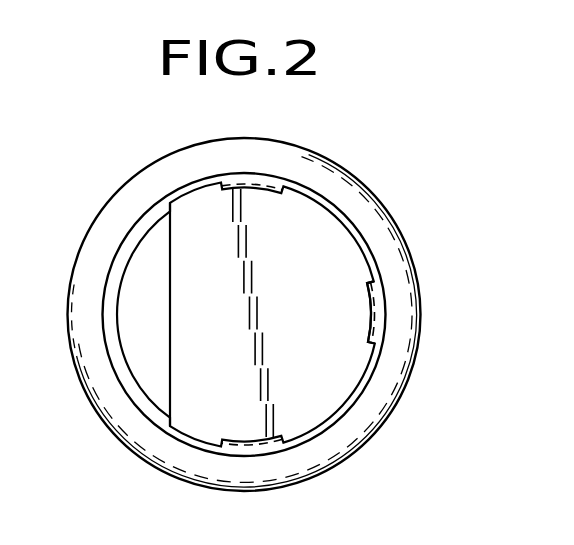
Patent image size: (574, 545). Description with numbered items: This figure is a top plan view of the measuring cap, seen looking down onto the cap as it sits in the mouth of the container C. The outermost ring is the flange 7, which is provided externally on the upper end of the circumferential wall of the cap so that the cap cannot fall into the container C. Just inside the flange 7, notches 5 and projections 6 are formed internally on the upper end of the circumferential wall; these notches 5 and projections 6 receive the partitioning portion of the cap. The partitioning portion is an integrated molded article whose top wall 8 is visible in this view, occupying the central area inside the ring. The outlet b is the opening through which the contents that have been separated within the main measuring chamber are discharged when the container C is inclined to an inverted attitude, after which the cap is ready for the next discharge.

The container C is at (392, 216).
The notches 5 is at (372, 318).
The projections 6 is at (382, 292).
The flange 7 is at (367, 372).
The top wall 8 is at (231, 323).
The outlet b is at (148, 342).